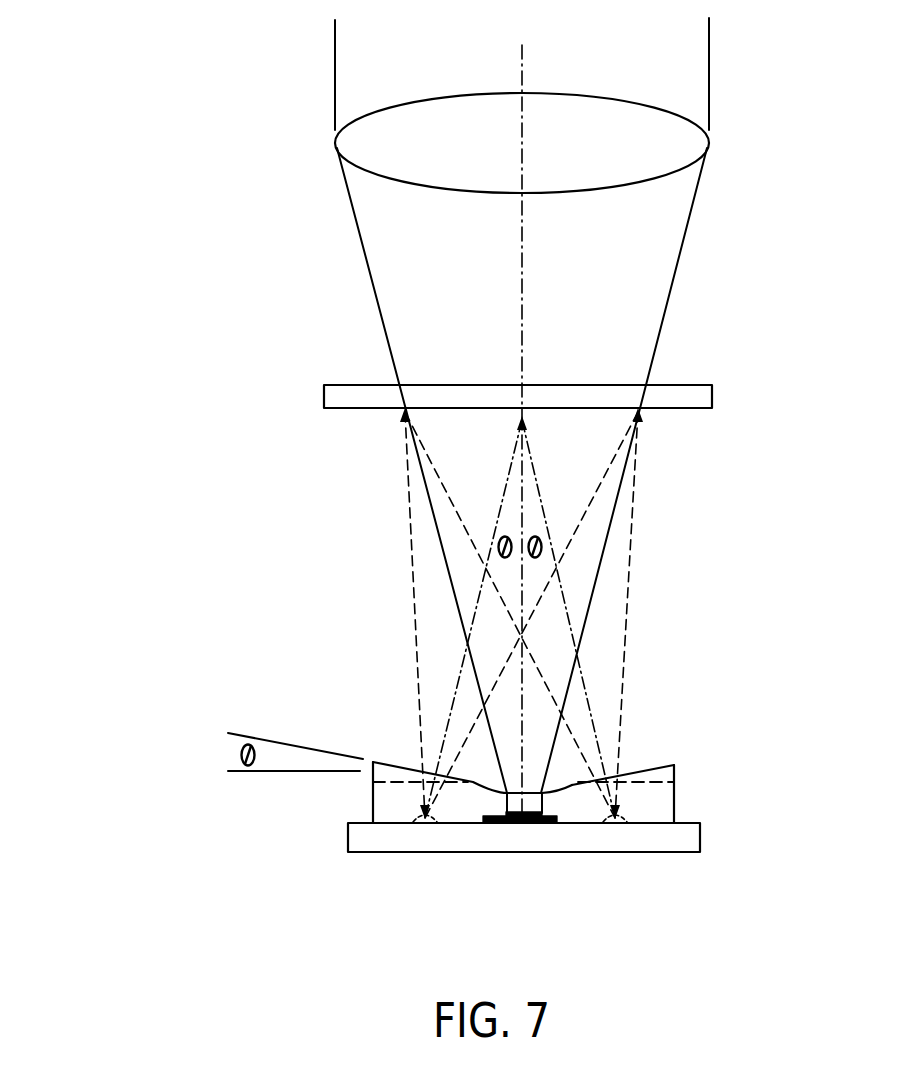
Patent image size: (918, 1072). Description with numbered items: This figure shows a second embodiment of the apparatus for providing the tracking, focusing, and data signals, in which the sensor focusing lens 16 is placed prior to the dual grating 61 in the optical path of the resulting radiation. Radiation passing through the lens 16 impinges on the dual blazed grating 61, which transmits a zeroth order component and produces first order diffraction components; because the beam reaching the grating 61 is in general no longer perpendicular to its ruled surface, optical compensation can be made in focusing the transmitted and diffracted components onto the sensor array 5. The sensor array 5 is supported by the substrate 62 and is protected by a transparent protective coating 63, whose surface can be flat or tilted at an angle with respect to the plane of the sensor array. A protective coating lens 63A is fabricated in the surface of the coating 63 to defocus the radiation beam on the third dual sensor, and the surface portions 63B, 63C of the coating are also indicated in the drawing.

The sensor focusing lens 16 is at (703, 146).
The dual blazed grating 61 is at (712, 394).
The substrate 62 is at (608, 852).
The protective coating 63 is at (674, 802).
The protective coating lens 63A is at (484, 787).
The right inclined surface of enclosure 63B is at (645, 765).
The dish portion of enclosure 63C is at (667, 760).
The sensor array 5 is at (506, 823).